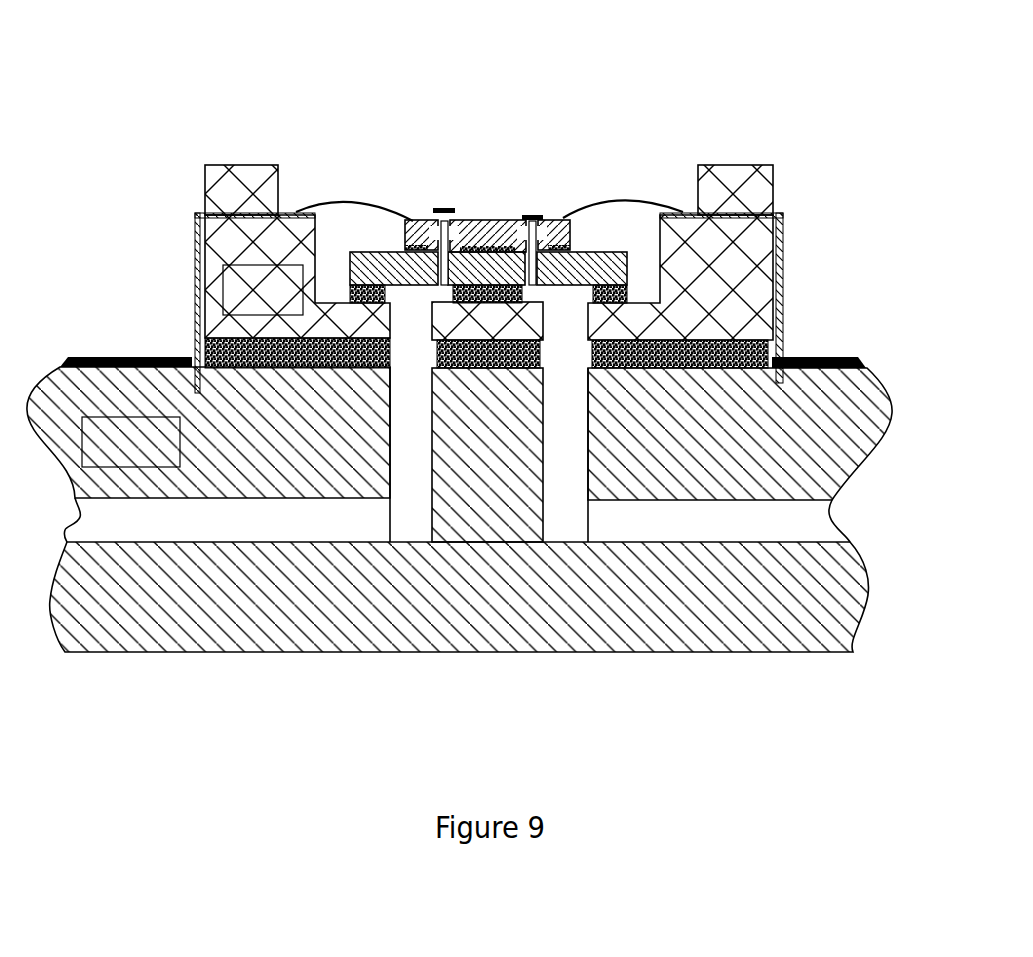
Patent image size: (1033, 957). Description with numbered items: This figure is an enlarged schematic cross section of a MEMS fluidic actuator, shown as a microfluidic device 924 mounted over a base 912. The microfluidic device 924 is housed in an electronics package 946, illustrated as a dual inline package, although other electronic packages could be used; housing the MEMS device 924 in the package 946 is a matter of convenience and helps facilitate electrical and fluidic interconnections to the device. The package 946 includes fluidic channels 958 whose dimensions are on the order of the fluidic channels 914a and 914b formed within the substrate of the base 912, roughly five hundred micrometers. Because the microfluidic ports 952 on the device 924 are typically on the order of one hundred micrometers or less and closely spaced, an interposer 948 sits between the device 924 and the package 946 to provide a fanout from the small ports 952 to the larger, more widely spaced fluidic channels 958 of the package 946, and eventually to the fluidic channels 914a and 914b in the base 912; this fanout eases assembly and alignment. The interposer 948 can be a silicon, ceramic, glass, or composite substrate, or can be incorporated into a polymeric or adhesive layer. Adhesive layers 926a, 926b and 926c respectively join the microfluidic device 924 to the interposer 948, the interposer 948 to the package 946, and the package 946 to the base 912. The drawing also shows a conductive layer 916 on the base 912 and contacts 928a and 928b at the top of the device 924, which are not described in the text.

The base 912 is at (150, 460).
The fluidic channel 914a is at (200, 527).
The fluidic channel 914b is at (672, 527).
The conductive layer 916 is at (133, 356).
The microfluidic device 924 is at (506, 137).
The adhesive layer 926a is at (568, 245).
The adhesive layer 926b is at (625, 295).
The adhesive layer 926c is at (757, 352).
The first contact 928a is at (447, 205).
The second contact 928b is at (540, 212).
The electronics package 946 is at (290, 307).
The interposer 948 is at (388, 275).
The microfluidic port 952 is at (440, 232).
The fluidic channel 958 is at (412, 320).